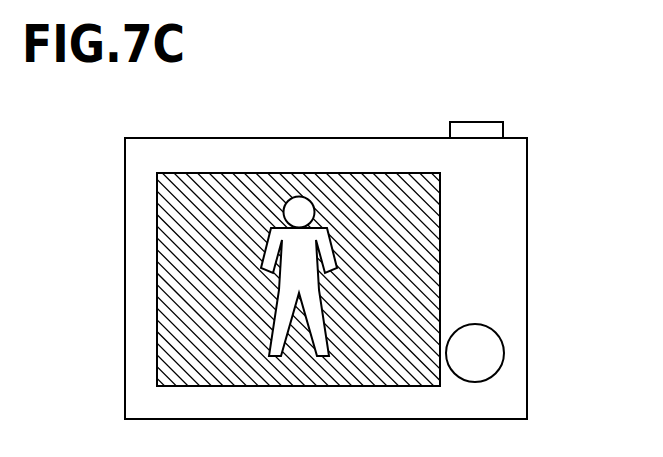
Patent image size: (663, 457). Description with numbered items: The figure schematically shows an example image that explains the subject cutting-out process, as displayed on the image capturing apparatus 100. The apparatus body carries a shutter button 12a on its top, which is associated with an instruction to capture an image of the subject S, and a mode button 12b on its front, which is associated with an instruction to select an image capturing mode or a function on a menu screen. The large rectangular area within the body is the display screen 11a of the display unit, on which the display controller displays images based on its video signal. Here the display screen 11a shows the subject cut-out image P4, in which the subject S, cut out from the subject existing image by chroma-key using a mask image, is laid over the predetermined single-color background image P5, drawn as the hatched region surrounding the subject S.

The image capturing apparatus 100 is at (279, 110).
The shutter button 12a is at (487, 122).
The display screen 11a is at (440, 218).
The mode button 12b is at (502, 338).
The subject cut-out image P4 is at (140, 278).
The background image P5 is at (397, 197).
The subject S is at (330, 237).